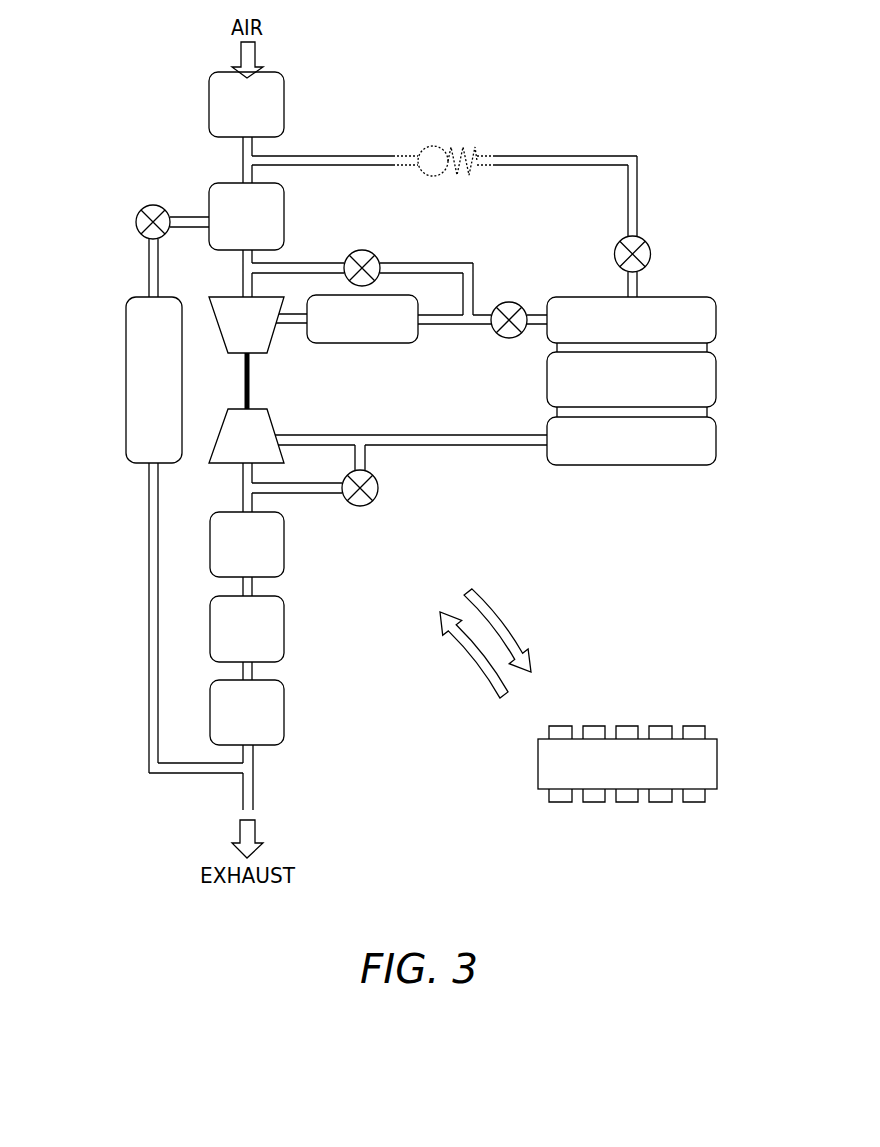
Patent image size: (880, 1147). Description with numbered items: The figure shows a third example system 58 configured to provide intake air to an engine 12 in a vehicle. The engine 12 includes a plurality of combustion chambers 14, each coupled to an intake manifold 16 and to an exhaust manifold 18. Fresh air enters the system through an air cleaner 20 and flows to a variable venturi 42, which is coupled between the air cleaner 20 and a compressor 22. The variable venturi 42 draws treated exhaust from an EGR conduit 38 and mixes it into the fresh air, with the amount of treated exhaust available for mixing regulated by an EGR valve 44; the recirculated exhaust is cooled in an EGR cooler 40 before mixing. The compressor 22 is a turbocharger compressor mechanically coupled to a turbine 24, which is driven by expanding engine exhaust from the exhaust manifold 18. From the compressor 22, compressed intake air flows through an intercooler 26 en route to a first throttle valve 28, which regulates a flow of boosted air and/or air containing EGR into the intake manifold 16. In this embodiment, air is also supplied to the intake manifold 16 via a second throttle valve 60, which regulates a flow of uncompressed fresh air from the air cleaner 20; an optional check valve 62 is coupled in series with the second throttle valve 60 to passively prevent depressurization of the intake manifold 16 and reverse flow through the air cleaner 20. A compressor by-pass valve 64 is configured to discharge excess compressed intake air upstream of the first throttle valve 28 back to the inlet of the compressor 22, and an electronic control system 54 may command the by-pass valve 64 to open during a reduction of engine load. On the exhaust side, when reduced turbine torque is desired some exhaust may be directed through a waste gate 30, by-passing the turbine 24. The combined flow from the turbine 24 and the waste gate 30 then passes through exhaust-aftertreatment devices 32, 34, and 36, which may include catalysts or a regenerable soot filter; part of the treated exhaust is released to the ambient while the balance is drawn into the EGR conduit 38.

The third example system 58 is at (125, 60).
The air cleaner 20 is at (258, 117).
The variable venturi 42 is at (258, 229).
The check valve 62 is at (437, 133).
The second throttle valve 60 is at (651, 254).
The EGR valve 44 is at (136, 221).
The EGR cooler 40 is at (165, 392).
The EGR conduit 38 is at (147, 595).
The compressor by-pass valve 64 is at (362, 250).
The compressor 22 is at (258, 338).
The turbine 24 is at (258, 449).
The intercooler 26 is at (373, 332).
The first throttle valve 28 is at (510, 302).
The engine 12 is at (666, 381).
The intake manifold 16 is at (642, 332).
The combustion chambers 14 is at (642, 392).
The exhaust manifold 18 is at (642, 453).
The waste gate 30 is at (380, 488).
The exhaust-aftertreatment device 32 is at (258, 557).
The exhaust-aftertreatment device 34 is at (258, 641).
The exhaust-aftertreatment device 36 is at (258, 725).
The electronic control system 54 is at (638, 776).